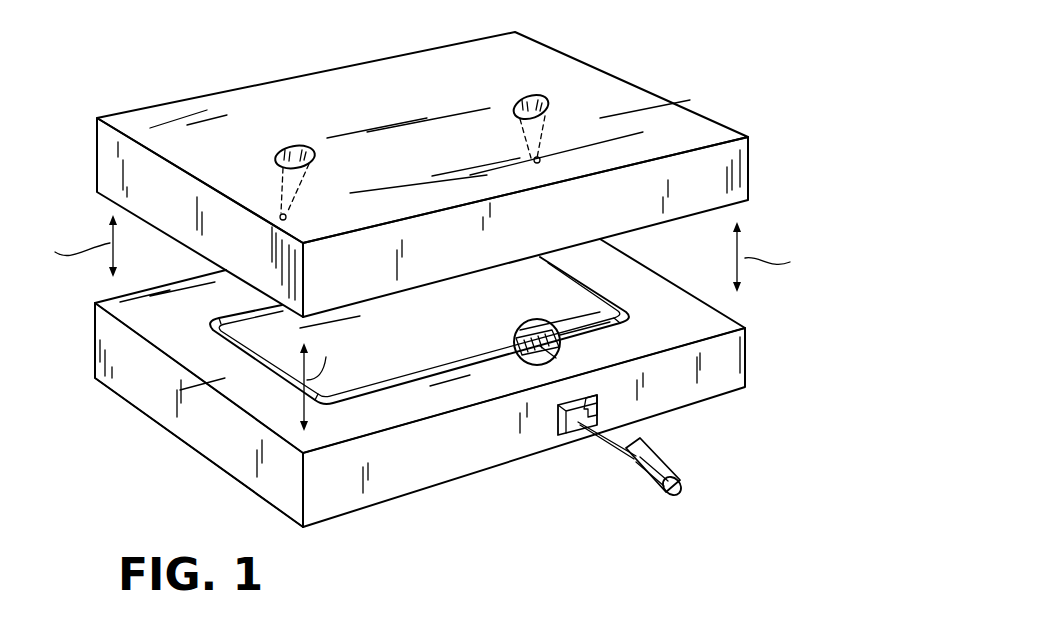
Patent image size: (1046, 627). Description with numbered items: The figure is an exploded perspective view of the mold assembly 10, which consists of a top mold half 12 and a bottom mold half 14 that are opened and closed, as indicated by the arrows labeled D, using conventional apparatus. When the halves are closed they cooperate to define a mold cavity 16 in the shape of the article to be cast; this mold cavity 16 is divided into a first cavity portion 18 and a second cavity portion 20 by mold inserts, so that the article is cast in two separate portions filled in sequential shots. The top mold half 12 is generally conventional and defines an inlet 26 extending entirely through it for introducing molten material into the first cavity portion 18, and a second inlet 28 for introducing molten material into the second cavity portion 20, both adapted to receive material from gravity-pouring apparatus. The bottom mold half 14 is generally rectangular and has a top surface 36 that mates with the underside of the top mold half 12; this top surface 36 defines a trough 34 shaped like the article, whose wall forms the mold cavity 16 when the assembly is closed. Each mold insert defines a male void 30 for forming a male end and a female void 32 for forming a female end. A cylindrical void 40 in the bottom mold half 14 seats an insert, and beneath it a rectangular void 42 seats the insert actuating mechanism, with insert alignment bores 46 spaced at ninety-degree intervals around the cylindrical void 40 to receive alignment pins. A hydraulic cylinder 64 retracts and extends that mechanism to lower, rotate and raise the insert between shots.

The mold assembly 10 is at (764, 70).
The top mold half 12 is at (461, 174).
The bottom mold half 14 is at (435, 397).
The mold cavity 16 is at (373, 390).
The first cavity portion 18 is at (277, 372).
The second cavity portion 20 is at (451, 386).
The inlet 26 is at (293, 148).
The inlet 28 is at (536, 95).
The male void 30 is at (553, 330).
The female void 32 is at (562, 356).
The trough 34 is at (447, 400).
The top surface 36 is at (177, 345).
The cylindrical void 40 is at (540, 337).
The rectangular void 42 is at (650, 450).
The insert alignment bores 46 is at (600, 414).
The hydraulic cylinder 64 is at (640, 478).